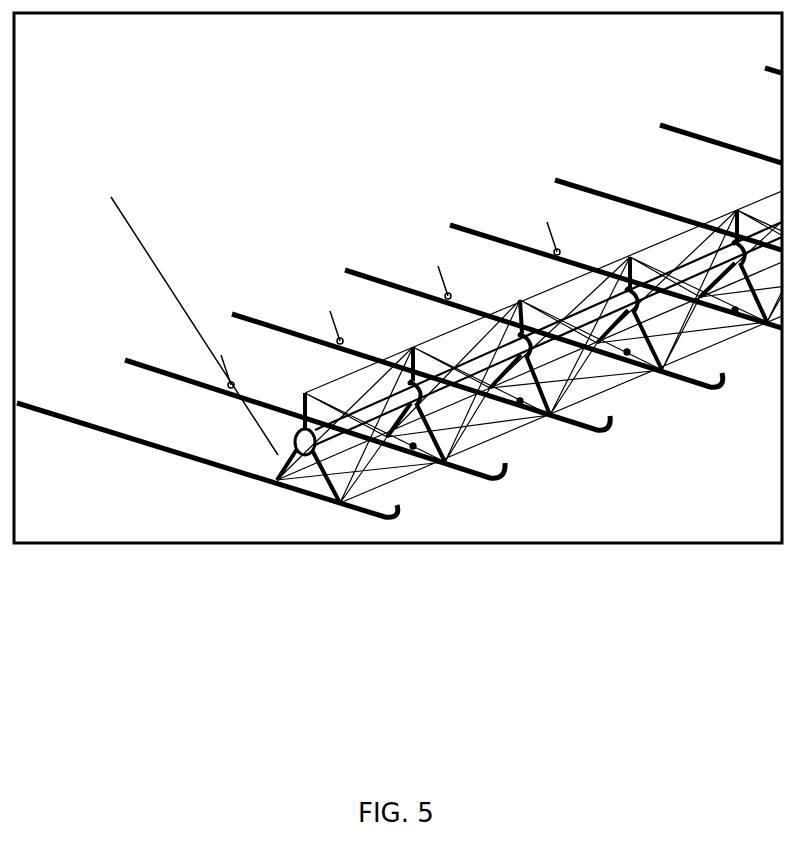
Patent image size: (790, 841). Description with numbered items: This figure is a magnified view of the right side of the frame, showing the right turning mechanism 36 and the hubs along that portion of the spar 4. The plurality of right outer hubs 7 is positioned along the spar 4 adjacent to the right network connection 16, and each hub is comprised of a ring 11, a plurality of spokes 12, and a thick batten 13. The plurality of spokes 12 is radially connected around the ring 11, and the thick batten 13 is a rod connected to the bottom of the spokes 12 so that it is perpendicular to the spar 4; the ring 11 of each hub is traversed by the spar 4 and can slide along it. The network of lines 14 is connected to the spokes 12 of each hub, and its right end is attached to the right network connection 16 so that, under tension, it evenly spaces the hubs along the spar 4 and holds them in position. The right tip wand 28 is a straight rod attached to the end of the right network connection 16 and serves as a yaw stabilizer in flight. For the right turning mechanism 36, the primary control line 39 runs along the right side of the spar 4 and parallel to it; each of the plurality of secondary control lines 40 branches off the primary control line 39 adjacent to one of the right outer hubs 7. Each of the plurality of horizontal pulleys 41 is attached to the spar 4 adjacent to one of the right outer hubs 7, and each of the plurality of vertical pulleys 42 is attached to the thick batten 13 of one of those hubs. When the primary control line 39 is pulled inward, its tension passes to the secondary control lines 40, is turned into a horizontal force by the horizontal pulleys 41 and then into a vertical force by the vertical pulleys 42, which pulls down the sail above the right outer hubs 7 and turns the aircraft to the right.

The right turning mechanism 36 is at (357, 207).
The right tip wand 28 is at (182, 280).
The network of lines 14 is at (763, 197).
The plurality of vertical pulleys 42 is at (345, 338).
The plurality of secondary control lines 40 is at (298, 415).
The spar 4 is at (373, 412).
The ring 11 is at (293, 438).
The right network connection 16 is at (294, 446).
The thick batten 13 is at (205, 462).
The plurality of spokes 12 is at (326, 497).
The plurality of horizontal pulleys 41 is at (415, 449).
The plurality of right outer hubs 7 is at (519, 412).
The primary control line 39 is at (722, 332).